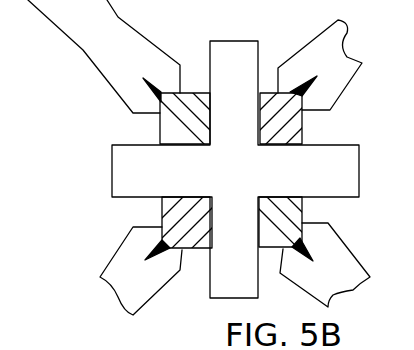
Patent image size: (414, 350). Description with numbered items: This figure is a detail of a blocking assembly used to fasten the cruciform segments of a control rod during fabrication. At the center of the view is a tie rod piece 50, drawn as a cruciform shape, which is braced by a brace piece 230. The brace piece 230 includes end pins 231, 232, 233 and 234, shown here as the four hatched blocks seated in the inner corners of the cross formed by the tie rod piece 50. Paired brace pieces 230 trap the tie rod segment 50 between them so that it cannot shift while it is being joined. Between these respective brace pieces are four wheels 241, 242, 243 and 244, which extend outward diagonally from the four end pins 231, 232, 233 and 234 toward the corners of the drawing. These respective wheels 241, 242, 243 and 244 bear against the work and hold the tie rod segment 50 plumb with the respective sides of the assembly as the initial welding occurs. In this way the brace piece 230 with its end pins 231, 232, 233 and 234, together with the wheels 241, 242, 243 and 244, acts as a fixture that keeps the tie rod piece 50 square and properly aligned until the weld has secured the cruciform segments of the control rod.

The tie rod piece 50 is at (250, 102).
The brace piece 230 is at (193, 93).
The end pin 231 is at (162, 212).
The end pin 232 is at (160, 134).
The end pin 233 is at (302, 132).
The end pin 234 is at (302, 212).
The wheel 241 is at (122, 243).
The wheel 242 is at (137, 30).
The wheel 243 is at (349, 40).
The wheel 244 is at (350, 243).